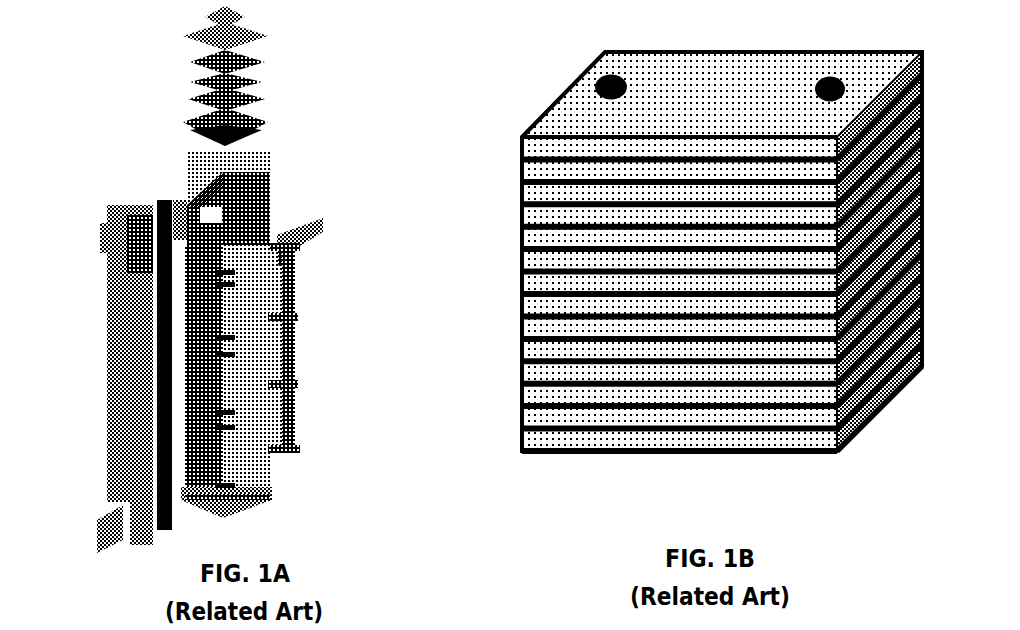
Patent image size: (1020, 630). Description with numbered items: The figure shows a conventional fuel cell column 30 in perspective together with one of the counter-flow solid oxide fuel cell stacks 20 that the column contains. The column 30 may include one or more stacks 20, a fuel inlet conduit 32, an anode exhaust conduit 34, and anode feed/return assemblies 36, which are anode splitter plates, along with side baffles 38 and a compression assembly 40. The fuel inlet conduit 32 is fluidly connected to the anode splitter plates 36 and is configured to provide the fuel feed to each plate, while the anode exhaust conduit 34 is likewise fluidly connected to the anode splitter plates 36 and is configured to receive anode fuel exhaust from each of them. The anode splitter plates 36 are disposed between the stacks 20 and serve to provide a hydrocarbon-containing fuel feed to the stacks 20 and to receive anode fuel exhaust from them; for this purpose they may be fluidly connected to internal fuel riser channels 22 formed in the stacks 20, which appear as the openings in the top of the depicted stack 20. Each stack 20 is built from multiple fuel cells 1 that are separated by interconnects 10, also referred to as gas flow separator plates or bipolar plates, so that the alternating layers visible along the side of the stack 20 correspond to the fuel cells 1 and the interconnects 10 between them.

In FIG. 1B, the fuel cell 1 is at (522, 355).
In FIG. 1B, the interconnect 10 is at (522, 242).
In FIG. 1A, the counter-flow solid oxide fuel cell stack 20 is at (191, 290).
In FIG. 1B, the counter-flow solid oxide fuel cell stack 20 is at (606, 481).
In FIG. 1B, the internal fuel riser channel 22 is at (596, 80).
In FIG. 1A, the fuel cell column 30 is at (283, 207).
In FIG. 1A, the fuel inlet conduit 32 is at (233, 452).
In FIG. 1A, the anode exhaust conduit 34 is at (290, 423).
In FIG. 1A, the anode feed/return assembly 36 is at (291, 316).
In FIG. 1A, the side baffle 38 is at (137, 413).
In FIG. 1A, the compression assembly 40 is at (177, 27).